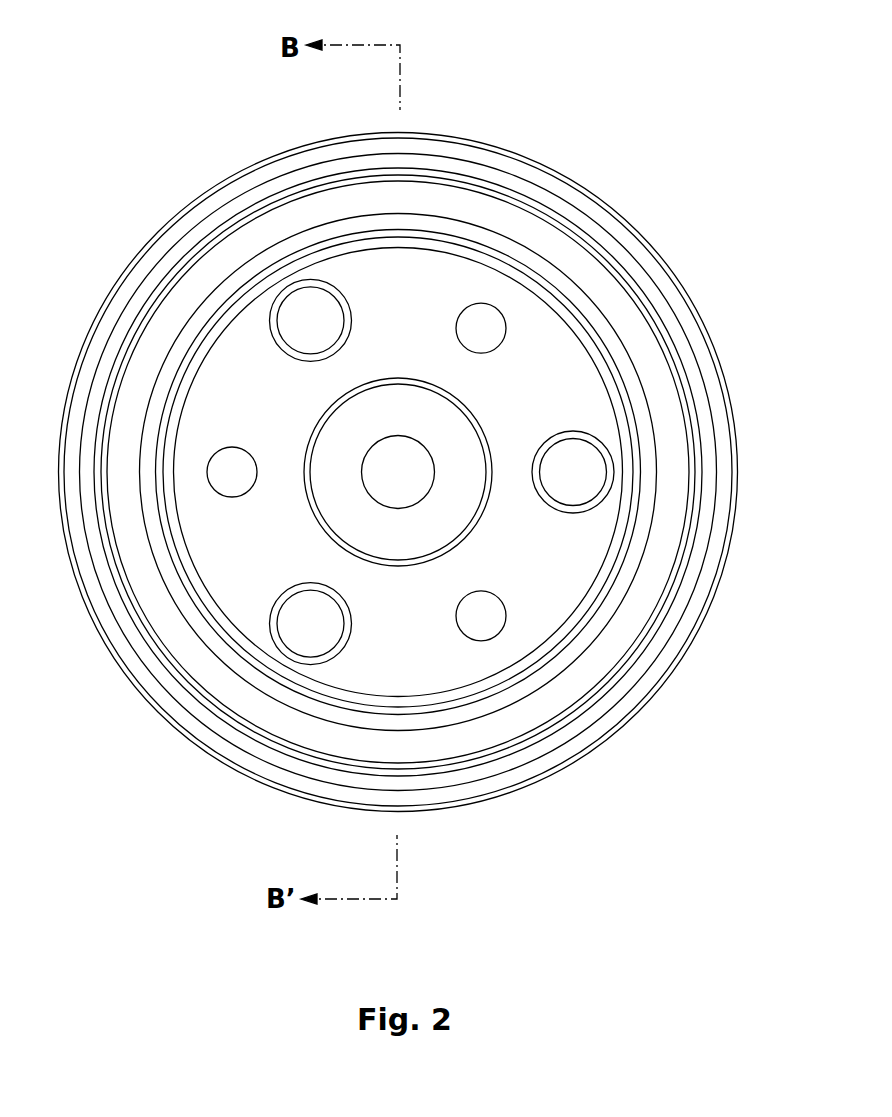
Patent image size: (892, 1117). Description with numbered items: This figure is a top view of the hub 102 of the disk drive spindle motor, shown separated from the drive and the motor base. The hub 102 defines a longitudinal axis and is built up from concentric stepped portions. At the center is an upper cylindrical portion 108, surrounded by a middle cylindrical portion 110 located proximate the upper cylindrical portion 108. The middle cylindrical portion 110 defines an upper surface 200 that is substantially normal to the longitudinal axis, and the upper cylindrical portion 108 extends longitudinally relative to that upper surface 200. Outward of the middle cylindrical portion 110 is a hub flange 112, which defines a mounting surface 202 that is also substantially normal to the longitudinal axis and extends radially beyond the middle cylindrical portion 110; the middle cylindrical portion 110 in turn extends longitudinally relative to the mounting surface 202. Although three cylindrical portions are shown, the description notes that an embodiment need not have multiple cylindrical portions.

The hub 102 is at (649, 90).
The upper cylindrical portion 108 is at (532, 598).
The middle cylindrical portion 110 is at (675, 430).
The hub flange 112 is at (632, 225).
The upper surface 200 is at (260, 236).
The mounting surface 202 is at (434, 148).